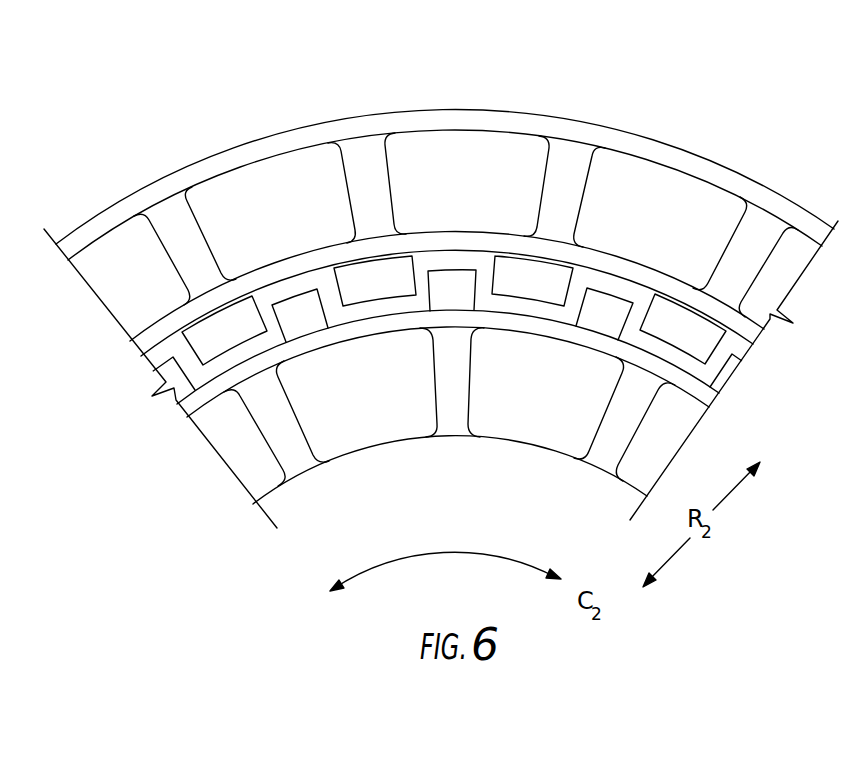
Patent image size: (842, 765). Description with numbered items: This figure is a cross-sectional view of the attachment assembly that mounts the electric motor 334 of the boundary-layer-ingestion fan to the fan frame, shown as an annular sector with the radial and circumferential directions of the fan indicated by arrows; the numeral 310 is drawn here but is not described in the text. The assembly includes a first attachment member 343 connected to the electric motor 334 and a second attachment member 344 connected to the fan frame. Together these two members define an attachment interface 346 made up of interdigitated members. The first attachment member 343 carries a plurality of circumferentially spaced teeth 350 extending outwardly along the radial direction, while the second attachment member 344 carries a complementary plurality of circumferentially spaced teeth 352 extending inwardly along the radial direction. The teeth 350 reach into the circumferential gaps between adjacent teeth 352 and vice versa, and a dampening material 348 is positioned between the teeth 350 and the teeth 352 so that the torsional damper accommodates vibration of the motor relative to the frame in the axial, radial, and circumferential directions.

The rotor core 310 is at (273, 135).
The second attachment member 344 is at (373, 155).
The dampening material 348 is at (462, 258).
The teeth of second attachment member 352 is at (360, 270).
The attachment interface 346 is at (488, 278).
The teeth of first attachment member 350 is at (593, 318).
The first attachment member 343 is at (435, 405).
The electric motor 334 is at (269, 493).